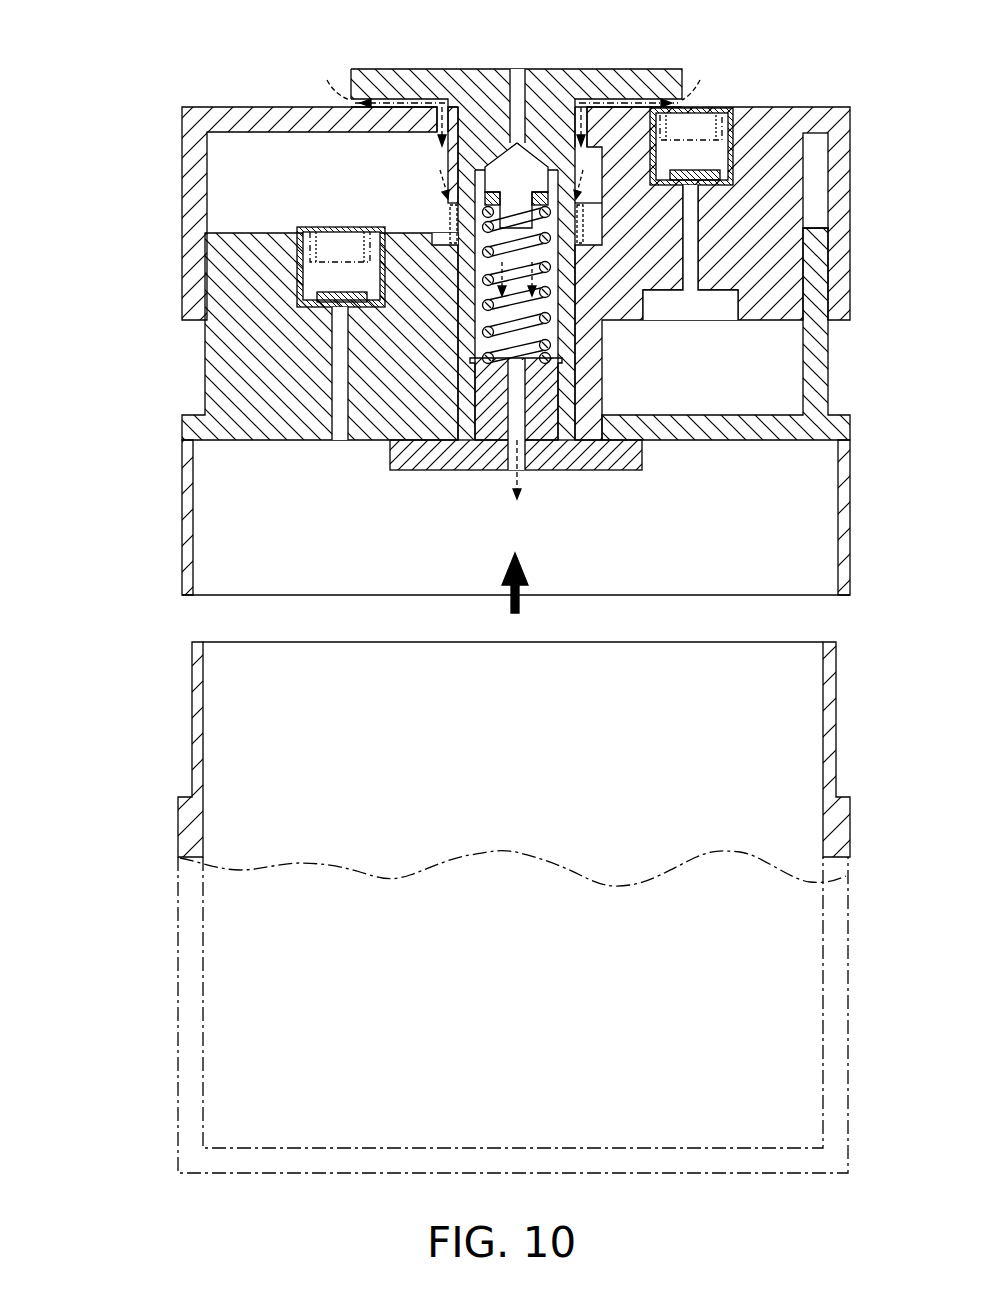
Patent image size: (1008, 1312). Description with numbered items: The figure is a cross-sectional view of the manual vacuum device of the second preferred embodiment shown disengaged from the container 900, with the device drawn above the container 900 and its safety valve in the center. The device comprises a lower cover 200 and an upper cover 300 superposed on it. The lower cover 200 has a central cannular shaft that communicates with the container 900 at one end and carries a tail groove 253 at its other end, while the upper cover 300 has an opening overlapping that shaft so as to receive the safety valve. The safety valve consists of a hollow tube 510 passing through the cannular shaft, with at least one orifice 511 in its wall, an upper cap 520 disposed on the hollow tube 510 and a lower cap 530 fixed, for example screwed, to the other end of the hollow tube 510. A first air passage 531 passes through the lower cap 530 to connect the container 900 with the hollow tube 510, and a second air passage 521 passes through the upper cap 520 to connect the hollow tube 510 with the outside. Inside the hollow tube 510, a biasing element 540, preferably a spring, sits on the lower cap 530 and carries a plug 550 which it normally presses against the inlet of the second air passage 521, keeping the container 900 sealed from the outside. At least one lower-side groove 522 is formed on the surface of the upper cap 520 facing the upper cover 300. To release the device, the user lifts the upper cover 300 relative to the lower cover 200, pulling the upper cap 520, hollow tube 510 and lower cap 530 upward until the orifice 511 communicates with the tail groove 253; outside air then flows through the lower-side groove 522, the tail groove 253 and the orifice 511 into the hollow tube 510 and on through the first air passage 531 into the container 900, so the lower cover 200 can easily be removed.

The lower cover 200 is at (180, 458).
The tail groove 253 is at (453, 206).
The upper cover 300 is at (182, 198).
The hollow tube 510 is at (462, 400).
The orifice 511 is at (572, 105).
The upper cap 520 is at (387, 80).
The second air passage 521 is at (513, 78).
The lower-side groove 522 is at (350, 100).
The lower cap 530 is at (463, 470).
The first air passage 531 is at (522, 468).
The biasing element 540 is at (473, 334).
The plug 550 is at (457, 110).
The container 900 is at (178, 812).